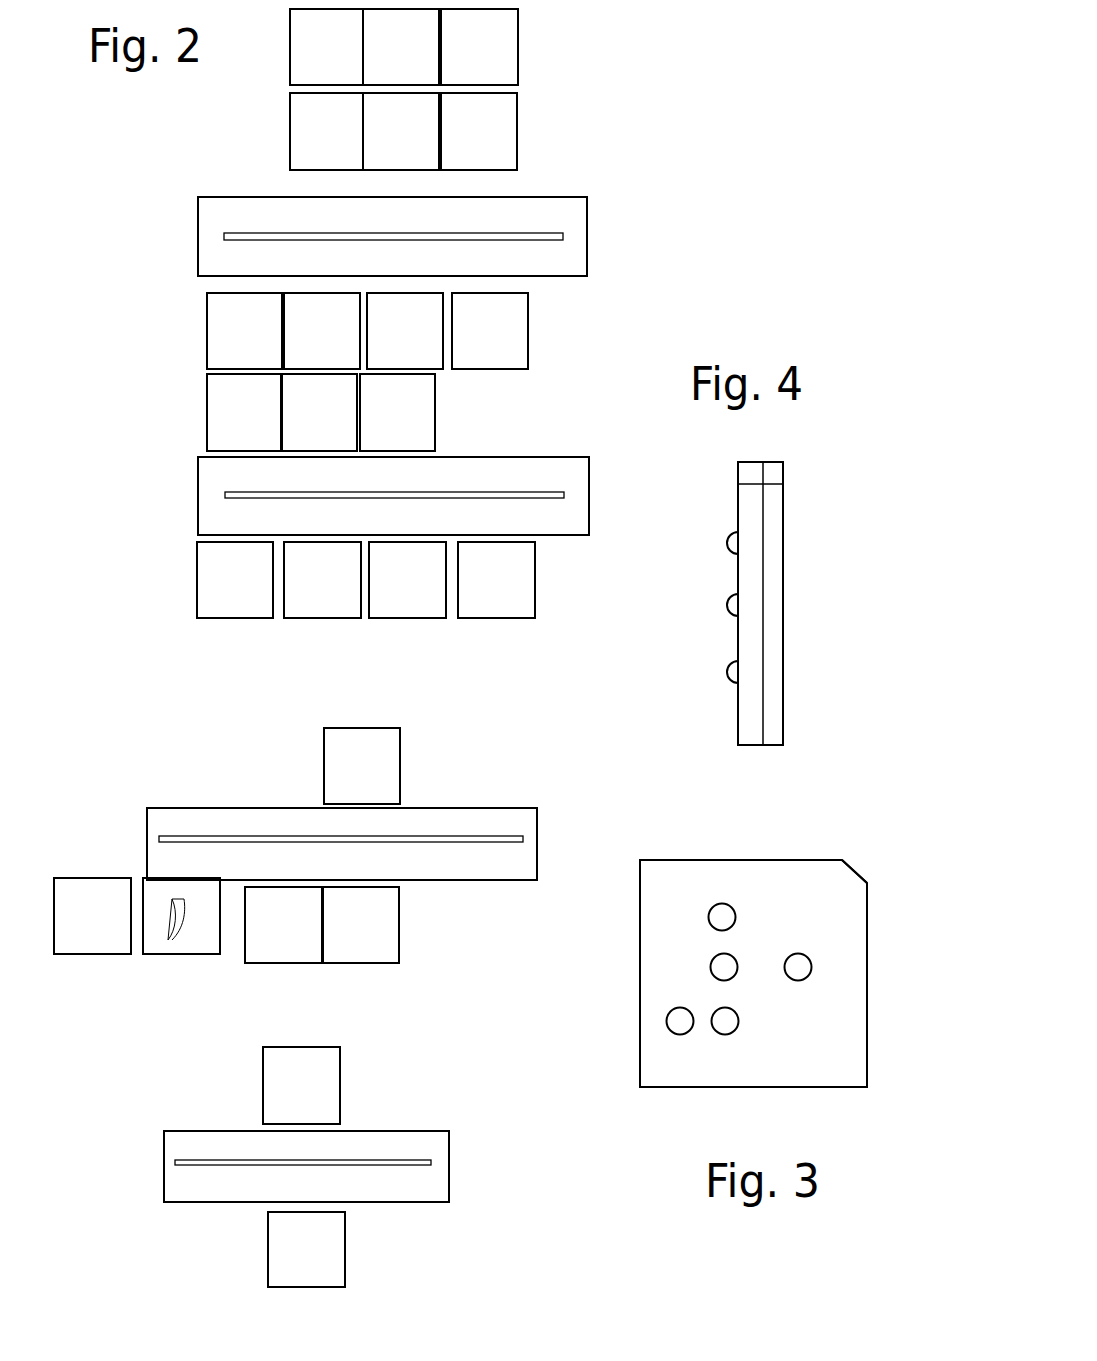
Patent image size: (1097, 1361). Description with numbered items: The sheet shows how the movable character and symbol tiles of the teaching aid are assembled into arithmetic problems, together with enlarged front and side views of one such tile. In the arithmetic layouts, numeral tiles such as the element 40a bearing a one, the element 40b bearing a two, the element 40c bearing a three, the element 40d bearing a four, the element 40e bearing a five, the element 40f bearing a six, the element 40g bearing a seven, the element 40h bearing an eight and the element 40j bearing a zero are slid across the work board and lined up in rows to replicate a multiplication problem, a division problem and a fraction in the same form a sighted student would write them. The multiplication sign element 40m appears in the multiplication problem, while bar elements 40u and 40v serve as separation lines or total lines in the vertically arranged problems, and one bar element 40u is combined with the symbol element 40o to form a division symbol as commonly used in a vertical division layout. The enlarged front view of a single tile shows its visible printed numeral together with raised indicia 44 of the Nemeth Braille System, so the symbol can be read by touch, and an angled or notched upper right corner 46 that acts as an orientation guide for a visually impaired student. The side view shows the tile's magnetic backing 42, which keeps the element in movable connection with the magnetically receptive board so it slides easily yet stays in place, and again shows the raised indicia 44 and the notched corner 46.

In FIG. 2, the movable element 40a is at (400, 933).
In FIG. 4, the movable element 40a is at (732, 520).
In FIG. 3, the movable element 40a is at (662, 934).
In FIG. 2, the movable element 40b is at (533, 37).
In FIG. 2, the movable element 40c is at (357, 1239).
In FIG. 2, the movable element 40d is at (193, 407).
In FIG. 2, the movable element 40e is at (525, 135).
In FIG. 2, the movable element 40f is at (187, 563).
In FIG. 2, the movable element 40g is at (410, 750).
In FIG. 2, the movable element 40h is at (407, 623).
In FIG. 2, the movable element 40j is at (538, 318).
In FIG. 2, the multiplication sign element 40m is at (273, 137).
In FIG. 2, the division operator symbol element 40o is at (172, 962).
In FIG. 2, the bar element 40u is at (597, 227).
In FIG. 2, the bar element 40v is at (160, 1152).
In FIG. 4, the magnetic backing 42 is at (777, 598).
In FIG. 3, the raised indicia 44 is at (798, 995).
In FIG. 4, the notched upper right corner 46 is at (769, 452).
In FIG. 3, the notched upper right corner 46 is at (858, 869).